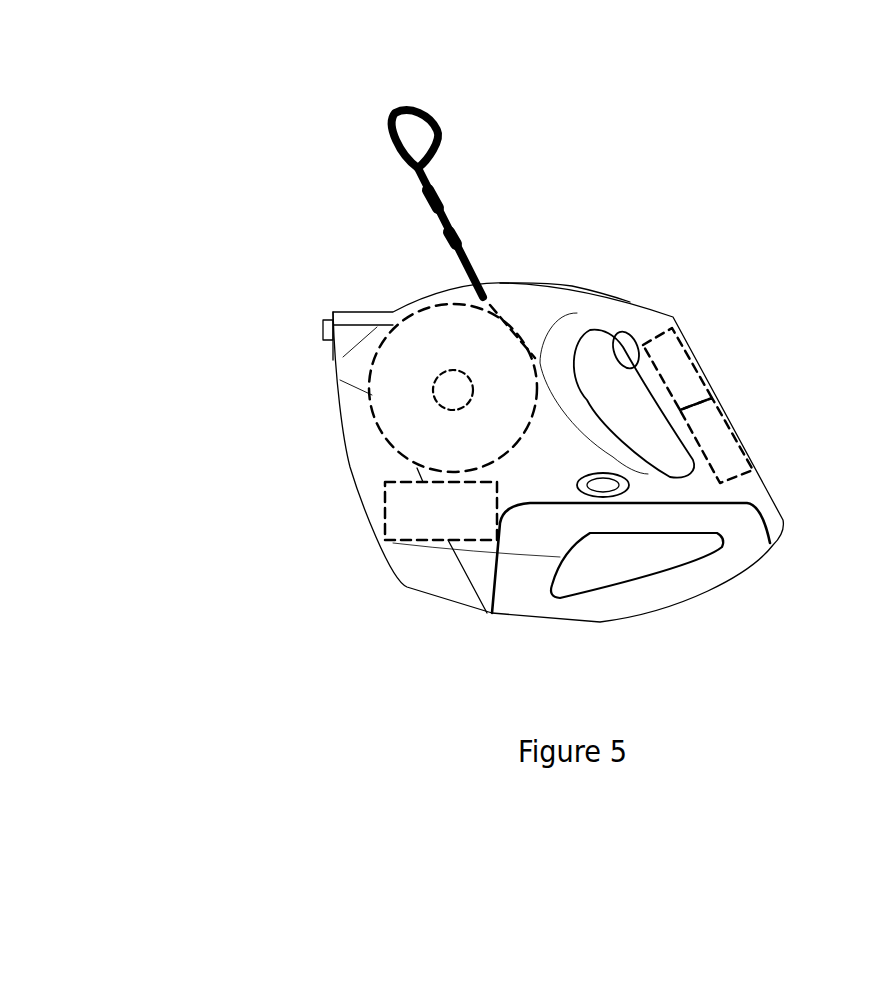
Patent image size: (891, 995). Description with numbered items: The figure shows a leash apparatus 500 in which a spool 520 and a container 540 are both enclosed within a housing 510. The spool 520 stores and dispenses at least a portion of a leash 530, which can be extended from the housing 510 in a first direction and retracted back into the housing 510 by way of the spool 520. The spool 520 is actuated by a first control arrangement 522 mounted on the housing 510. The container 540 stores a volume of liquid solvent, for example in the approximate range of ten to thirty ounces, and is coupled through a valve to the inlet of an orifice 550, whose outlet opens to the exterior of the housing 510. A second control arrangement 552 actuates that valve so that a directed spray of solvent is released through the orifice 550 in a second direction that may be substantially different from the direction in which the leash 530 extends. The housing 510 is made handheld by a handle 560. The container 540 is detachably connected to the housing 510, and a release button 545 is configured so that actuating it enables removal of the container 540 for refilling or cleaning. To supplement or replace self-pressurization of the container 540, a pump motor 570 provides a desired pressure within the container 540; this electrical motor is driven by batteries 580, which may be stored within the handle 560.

The leash apparatus 500 is at (203, 86).
The housing 510 is at (347, 468).
The spool 520 is at (420, 310).
The leash 530 is at (440, 110).
The second control arrangement 552 is at (572, 282).
The first control arrangement 522 is at (637, 350).
The handle 560 is at (703, 372).
The batteries 580 is at (703, 380).
The release button 545 is at (633, 483).
The container 540 is at (707, 567).
The orifice 550 is at (323, 328).
The pump motor 570 is at (385, 523).